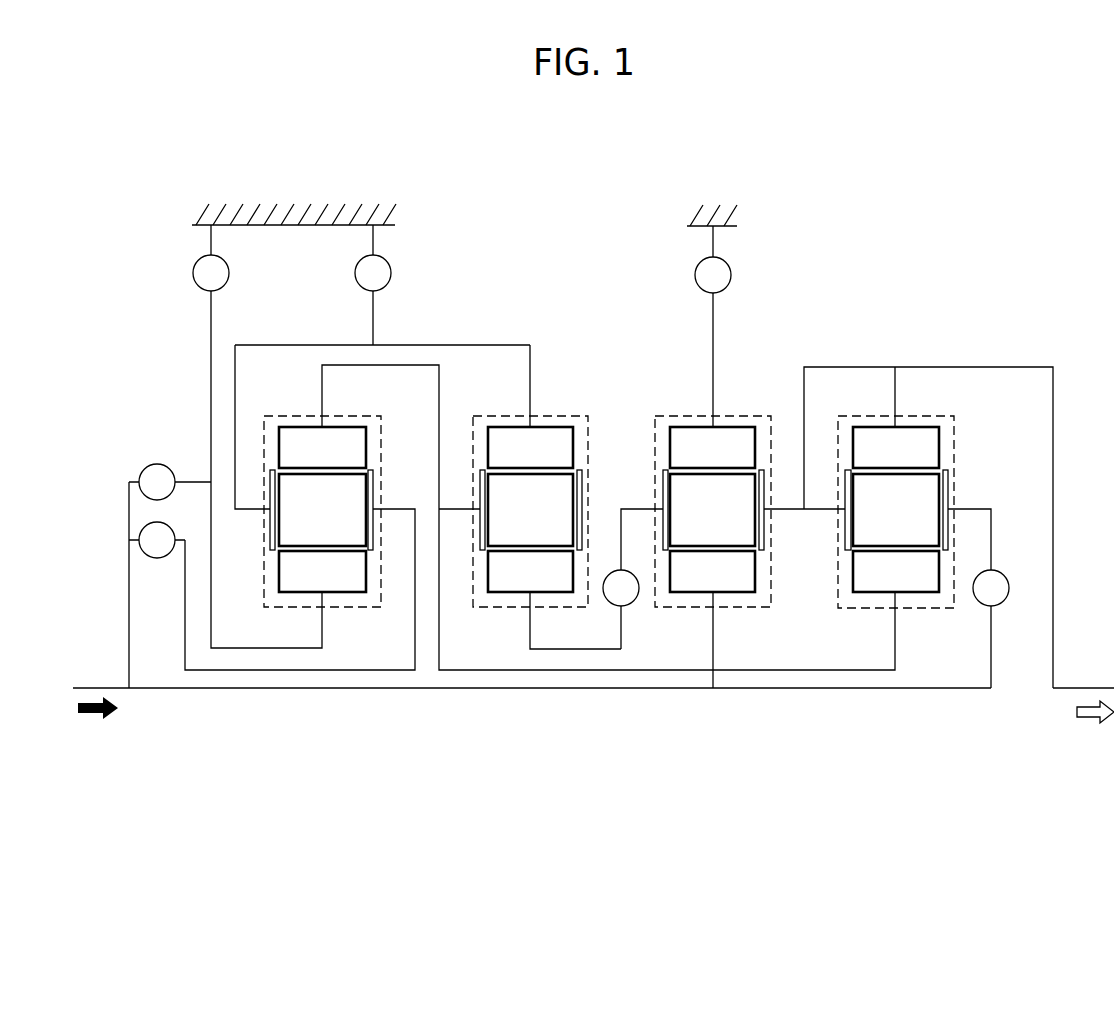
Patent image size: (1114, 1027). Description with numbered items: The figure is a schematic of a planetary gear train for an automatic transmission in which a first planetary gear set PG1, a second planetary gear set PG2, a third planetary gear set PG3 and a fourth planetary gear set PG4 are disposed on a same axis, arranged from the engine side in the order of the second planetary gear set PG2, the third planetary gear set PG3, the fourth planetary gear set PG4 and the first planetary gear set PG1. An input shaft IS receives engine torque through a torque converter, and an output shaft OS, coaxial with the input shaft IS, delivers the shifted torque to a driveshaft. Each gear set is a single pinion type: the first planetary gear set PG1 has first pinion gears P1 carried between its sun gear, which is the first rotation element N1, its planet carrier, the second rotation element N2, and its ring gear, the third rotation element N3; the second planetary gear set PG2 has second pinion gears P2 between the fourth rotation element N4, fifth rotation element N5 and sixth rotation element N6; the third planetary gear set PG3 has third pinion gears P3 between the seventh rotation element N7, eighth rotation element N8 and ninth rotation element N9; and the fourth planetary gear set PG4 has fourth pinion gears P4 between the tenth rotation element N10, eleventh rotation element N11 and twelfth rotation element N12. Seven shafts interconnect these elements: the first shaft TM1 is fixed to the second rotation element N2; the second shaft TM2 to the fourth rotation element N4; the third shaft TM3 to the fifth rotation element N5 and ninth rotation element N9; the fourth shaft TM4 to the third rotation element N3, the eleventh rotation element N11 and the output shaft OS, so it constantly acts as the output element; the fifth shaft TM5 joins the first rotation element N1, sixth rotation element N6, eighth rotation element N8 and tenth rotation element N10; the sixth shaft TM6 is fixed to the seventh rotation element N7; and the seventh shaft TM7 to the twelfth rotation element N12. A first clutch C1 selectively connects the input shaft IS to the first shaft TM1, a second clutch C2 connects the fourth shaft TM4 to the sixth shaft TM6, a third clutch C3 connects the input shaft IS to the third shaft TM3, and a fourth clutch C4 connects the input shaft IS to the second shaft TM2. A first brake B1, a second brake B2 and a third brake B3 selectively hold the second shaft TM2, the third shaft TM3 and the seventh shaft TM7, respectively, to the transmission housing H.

The transmission housing H is at (243, 215).
The first brake B1 is at (211, 258).
The second brake B2 is at (382, 367).
The third brake B3 is at (713, 259).
The first clutch C1 is at (978, 598).
The second clutch C2 is at (633, 579).
The third clutch C3 is at (157, 540).
The fourth clutch C4 is at (170, 576).
The input shaft IS is at (92, 688).
The output shaft OS is at (1093, 688).
The first shaft TM1 is at (991, 548).
The second shaft TM2 is at (242, 650).
The third shaft TM3 is at (392, 672).
The fourth shaft TM4 is at (925, 366).
The fifth shaft TM5 is at (630, 672).
The sixth shaft TM6 is at (571, 650).
The seventh shaft TM7 is at (713, 308).
The first planetary gear set PG1 is at (926, 596).
The second planetary gear set PG2 is at (351, 596).
The third planetary gear set PG3 is at (558, 596).
The fourth planetary gear set PG4 is at (743, 596).
The first pinion gears P1 is at (896, 510).
The second pinion gears P2 is at (322, 510).
The third pinion gears P3 is at (530, 510).
The fourth pinion gears P4 is at (712, 510).
The first rotation element N1 is at (896, 571).
The second rotation element N2 is at (948, 478).
The third rotation element N3 is at (896, 447).
The fourth rotation element N4 is at (322, 571).
The fifth rotation element N5 is at (373, 478).
The sixth rotation element N6 is at (322, 447).
The seventh rotation element N7 is at (530, 571).
The eighth rotation element N8 is at (582, 478).
The ninth rotation element N9 is at (530, 447).
The tenth rotation element N10 is at (712, 571).
The eleventh rotation element N11 is at (765, 535).
The twelfth rotation element N12 is at (712, 447).